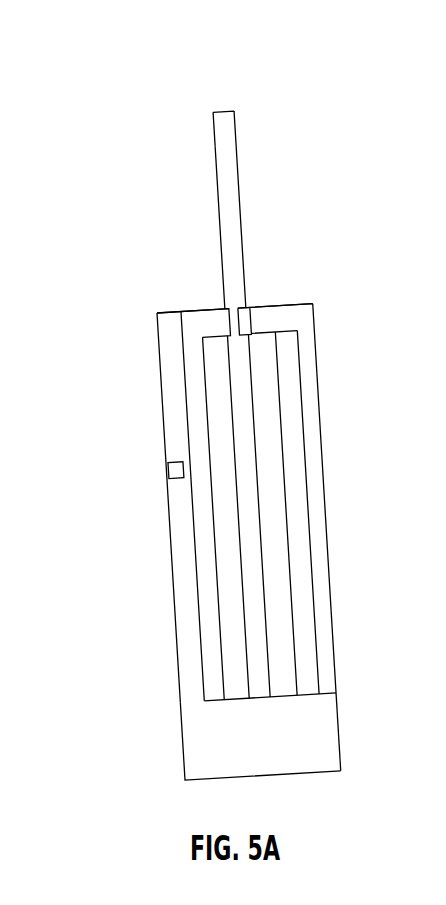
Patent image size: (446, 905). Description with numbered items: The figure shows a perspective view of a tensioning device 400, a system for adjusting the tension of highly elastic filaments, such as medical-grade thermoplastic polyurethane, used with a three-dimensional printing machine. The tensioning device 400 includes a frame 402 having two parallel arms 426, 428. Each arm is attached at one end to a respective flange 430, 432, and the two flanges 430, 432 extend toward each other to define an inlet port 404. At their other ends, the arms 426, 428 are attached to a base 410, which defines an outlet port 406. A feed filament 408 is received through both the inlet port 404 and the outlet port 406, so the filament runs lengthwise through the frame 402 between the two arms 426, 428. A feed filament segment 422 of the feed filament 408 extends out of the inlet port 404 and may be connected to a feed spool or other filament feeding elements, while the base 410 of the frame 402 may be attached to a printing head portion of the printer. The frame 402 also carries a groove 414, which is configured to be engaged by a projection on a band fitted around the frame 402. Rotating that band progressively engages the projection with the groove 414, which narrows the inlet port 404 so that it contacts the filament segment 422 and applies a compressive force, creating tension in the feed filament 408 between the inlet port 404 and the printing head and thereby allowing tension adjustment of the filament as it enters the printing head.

The tensioning device 400 is at (203, 443).
The frame 402 is at (246, 503).
The inlet port 404 is at (193, 324).
The outlet port 406 is at (270, 697).
The feed filament 408 is at (242, 421).
The base 410 is at (338, 732).
The groove 414 is at (176, 470).
The feed filament segment 422 is at (224, 128).
The arm 426 is at (202, 505).
The arm 428 is at (297, 513).
The flange 430 is at (276, 319).
The flange 432 is at (260, 736).